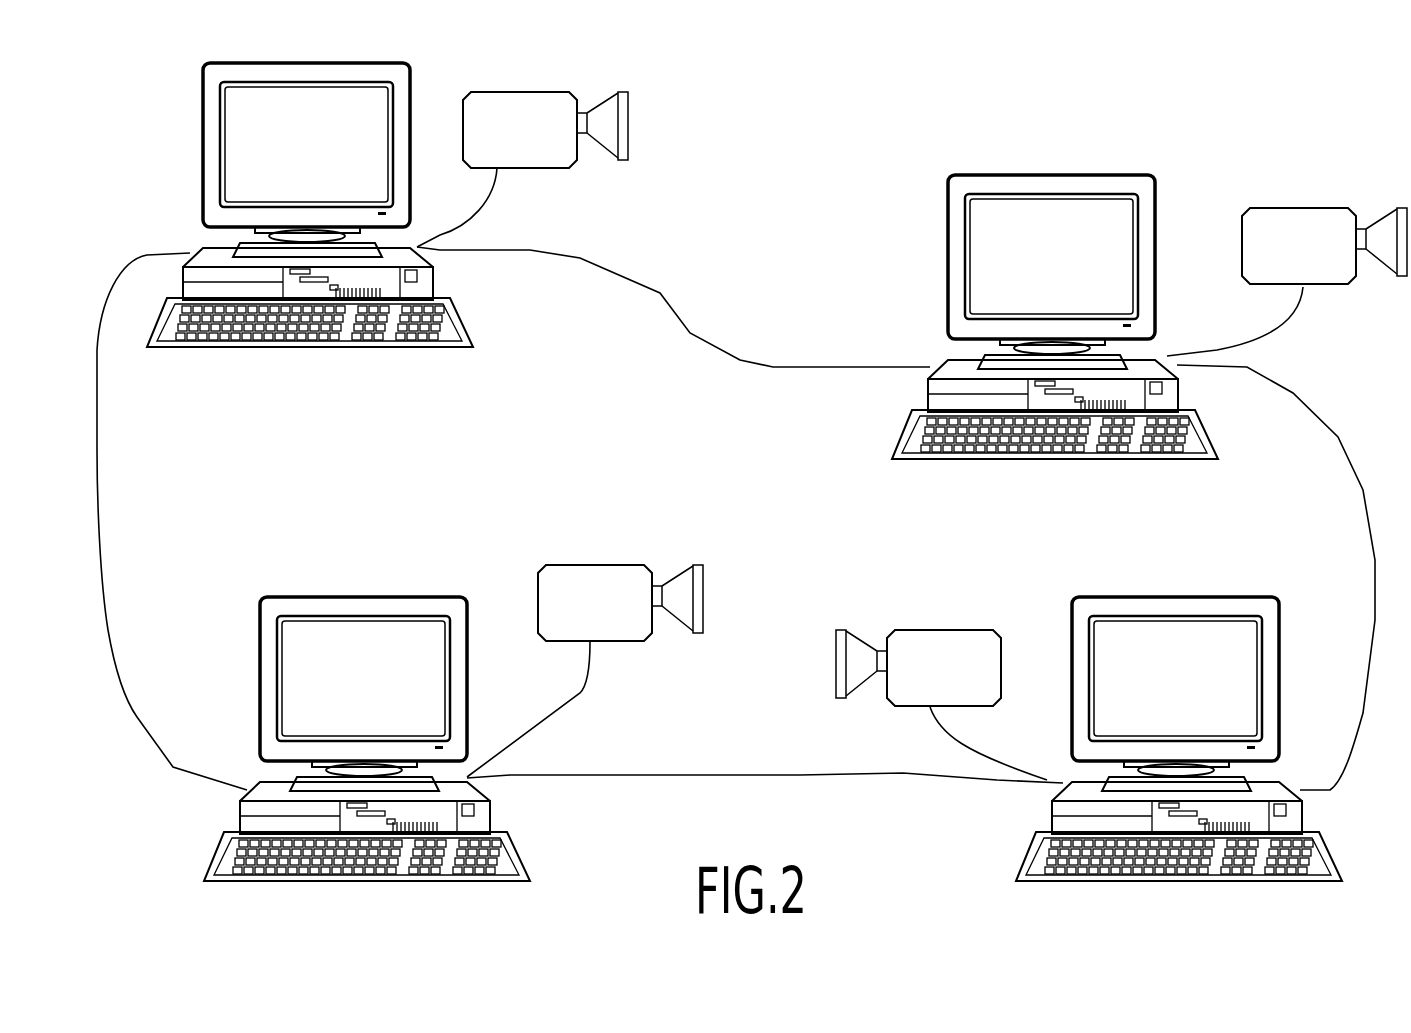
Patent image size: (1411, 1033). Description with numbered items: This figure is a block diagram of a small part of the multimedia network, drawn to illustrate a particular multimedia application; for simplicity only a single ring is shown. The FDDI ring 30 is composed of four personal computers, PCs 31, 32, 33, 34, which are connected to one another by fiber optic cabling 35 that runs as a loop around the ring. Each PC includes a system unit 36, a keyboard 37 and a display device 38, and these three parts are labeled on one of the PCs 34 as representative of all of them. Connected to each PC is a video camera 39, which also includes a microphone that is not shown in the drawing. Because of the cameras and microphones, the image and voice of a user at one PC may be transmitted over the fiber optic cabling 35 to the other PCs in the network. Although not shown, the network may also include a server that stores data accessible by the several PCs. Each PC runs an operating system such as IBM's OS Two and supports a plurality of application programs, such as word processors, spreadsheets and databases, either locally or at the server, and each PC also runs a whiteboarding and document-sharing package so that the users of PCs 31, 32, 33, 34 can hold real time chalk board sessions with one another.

The FDDI ring 30 is at (544, 428).
The PC 31 is at (172, 146).
The PC 32 is at (905, 262).
The PC 33 is at (1095, 580).
The PC 34 is at (428, 694).
The fiber optic cabling 35 is at (97, 447).
The system unit 36 is at (242, 813).
The keyboard 37 is at (518, 855).
The display device 38 is at (383, 597).
The video camera 39 is at (580, 565).